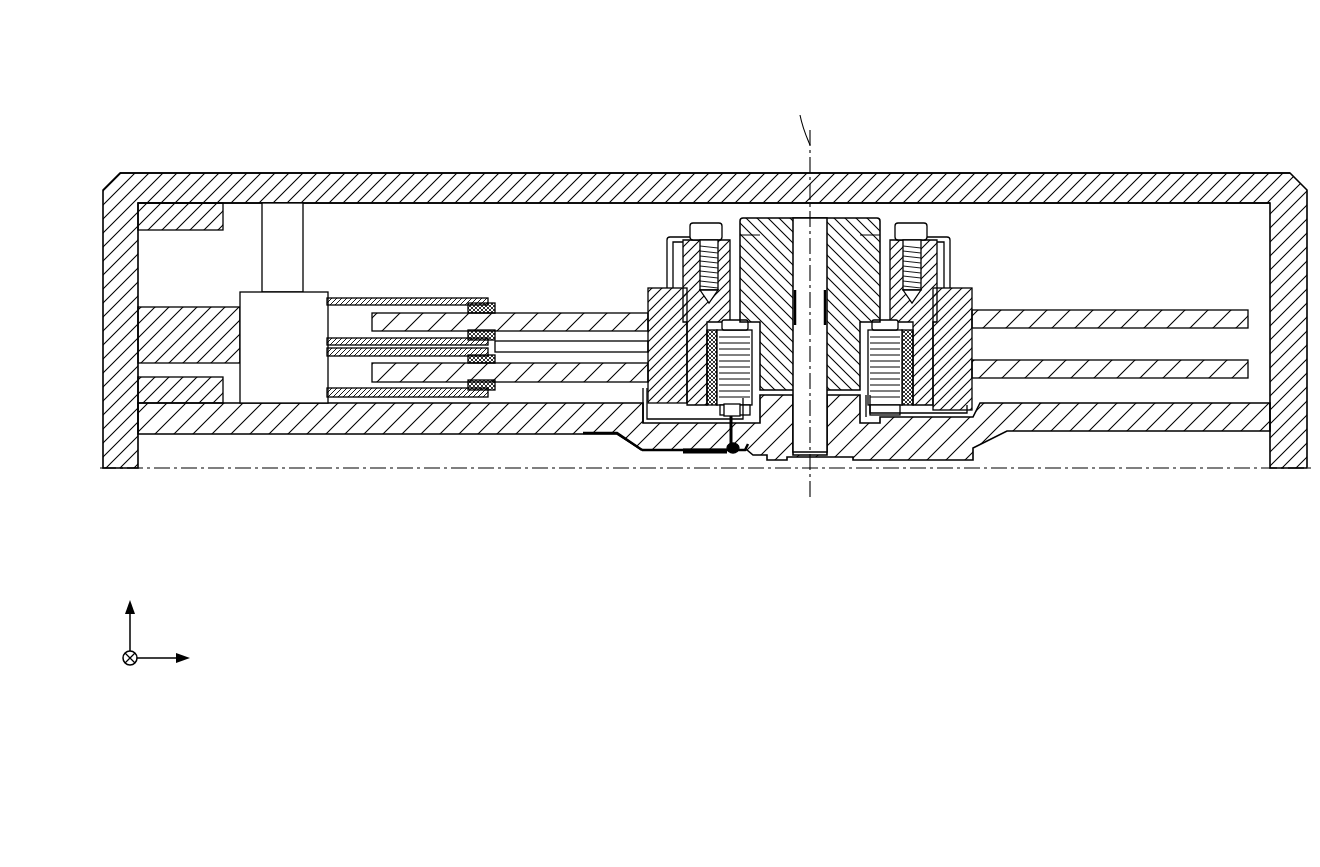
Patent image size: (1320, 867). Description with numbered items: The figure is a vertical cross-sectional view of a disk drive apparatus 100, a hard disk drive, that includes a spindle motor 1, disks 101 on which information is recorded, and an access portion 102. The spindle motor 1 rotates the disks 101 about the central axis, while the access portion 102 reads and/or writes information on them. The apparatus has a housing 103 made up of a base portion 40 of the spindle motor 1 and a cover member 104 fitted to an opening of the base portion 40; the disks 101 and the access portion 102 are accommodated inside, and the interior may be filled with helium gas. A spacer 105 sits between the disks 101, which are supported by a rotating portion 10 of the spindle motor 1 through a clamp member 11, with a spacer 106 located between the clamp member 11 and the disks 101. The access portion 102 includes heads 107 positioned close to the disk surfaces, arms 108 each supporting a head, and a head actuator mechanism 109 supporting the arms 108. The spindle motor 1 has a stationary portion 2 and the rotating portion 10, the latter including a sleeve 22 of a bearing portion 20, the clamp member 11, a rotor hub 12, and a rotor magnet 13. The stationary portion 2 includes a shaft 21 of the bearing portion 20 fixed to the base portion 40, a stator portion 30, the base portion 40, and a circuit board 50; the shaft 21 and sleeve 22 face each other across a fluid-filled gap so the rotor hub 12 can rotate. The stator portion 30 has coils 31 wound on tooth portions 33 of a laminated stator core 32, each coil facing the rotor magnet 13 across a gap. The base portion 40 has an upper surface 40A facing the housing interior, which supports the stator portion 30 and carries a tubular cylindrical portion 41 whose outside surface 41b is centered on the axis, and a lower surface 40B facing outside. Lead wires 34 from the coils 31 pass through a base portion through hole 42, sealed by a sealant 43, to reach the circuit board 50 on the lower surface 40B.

The disk drive apparatus 100 is at (706, 395).
The spindle motor 1 is at (972, 230).
The stationary portion 2 is at (965, 475).
The rotating portion 10 is at (783, 343).
The clamp member 11 is at (667, 243).
The rotor hub 12 is at (890, 242).
The rotor magnet 13 is at (688, 455).
The bearing portion 20 is at (796, 275).
The shaft 21 is at (793, 217).
The sleeve 22 is at (772, 217).
The stator portion 30 is at (772, 360).
The coils 31 is at (740, 300).
The stator core 32 is at (712, 318).
The tooth portions 33 is at (722, 330).
The lead wires 34 is at (714, 455).
The base portion 40 is at (667, 514).
The upper surface 40A is at (618, 437).
The lower surface 40B is at (663, 453).
The cylindrical portion 41 is at (962, 318).
The outside surface 41b is at (888, 415).
The base portion through hole 42 is at (731, 445).
The sealant 43 is at (742, 442).
The circuit board 50 is at (676, 455).
The disks 101 is at (547, 330).
The access portion 102 is at (412, 303).
The housing 103 is at (548, 155).
The cover member 104 is at (620, 180).
The spacer 105 is at (648, 353).
The spacer 106 is at (648, 300).
The heads 107 is at (491, 304).
The arms 108 is at (412, 298).
The head actuator mechanism 109 is at (319, 292).